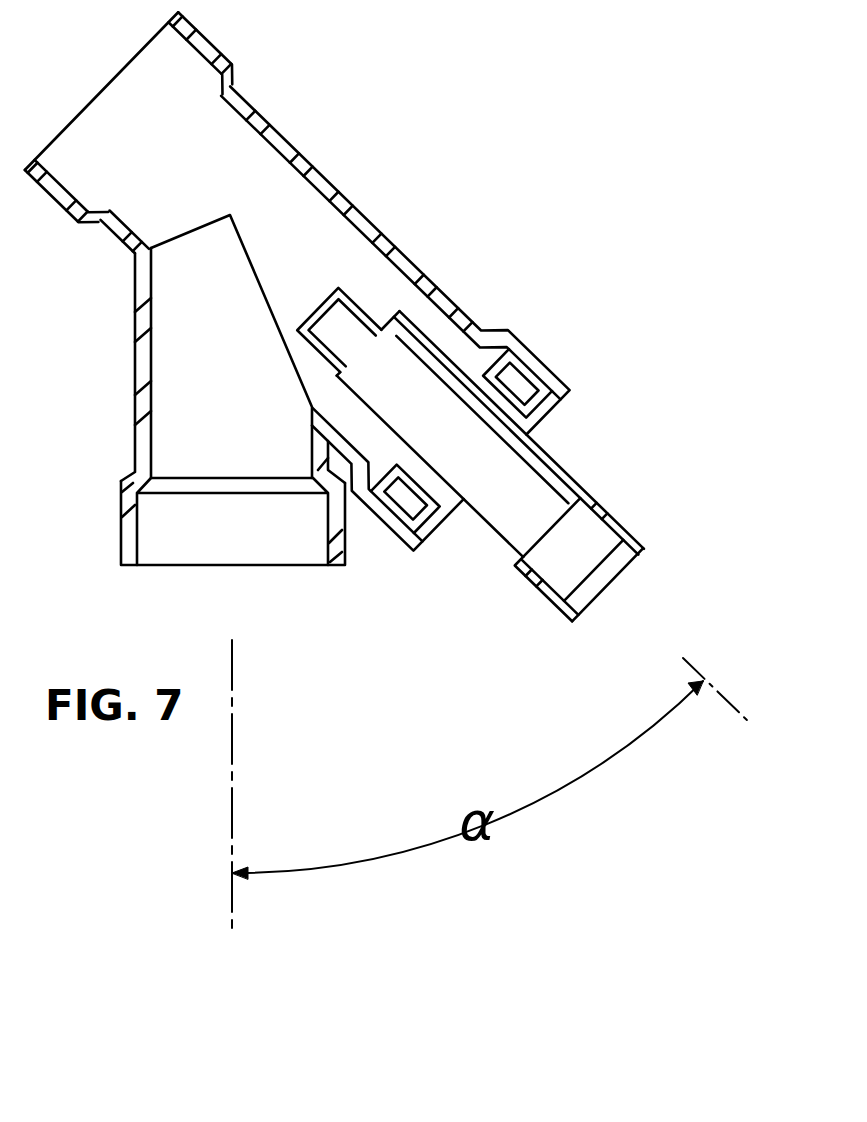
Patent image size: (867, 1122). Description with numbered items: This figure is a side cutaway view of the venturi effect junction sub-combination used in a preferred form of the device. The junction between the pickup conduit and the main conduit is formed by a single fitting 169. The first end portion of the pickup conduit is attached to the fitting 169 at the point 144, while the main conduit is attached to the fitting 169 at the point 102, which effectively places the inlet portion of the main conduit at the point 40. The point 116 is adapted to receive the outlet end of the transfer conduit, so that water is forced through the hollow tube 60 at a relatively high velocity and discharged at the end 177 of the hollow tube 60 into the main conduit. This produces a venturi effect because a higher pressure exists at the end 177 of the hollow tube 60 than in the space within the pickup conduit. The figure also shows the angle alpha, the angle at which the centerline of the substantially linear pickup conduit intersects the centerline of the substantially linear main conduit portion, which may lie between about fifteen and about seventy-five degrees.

The main conduit attachment point 102 is at (75, 113).
The fitting 169 is at (370, 178).
The end of the hollow tube 177 is at (330, 303).
The hollow tube 60 is at (417, 388).
The inlet portion point 40 is at (540, 428).
The pickup conduit attachment point 144 is at (225, 565).
The transfer conduit receiving point 116 is at (620, 580).